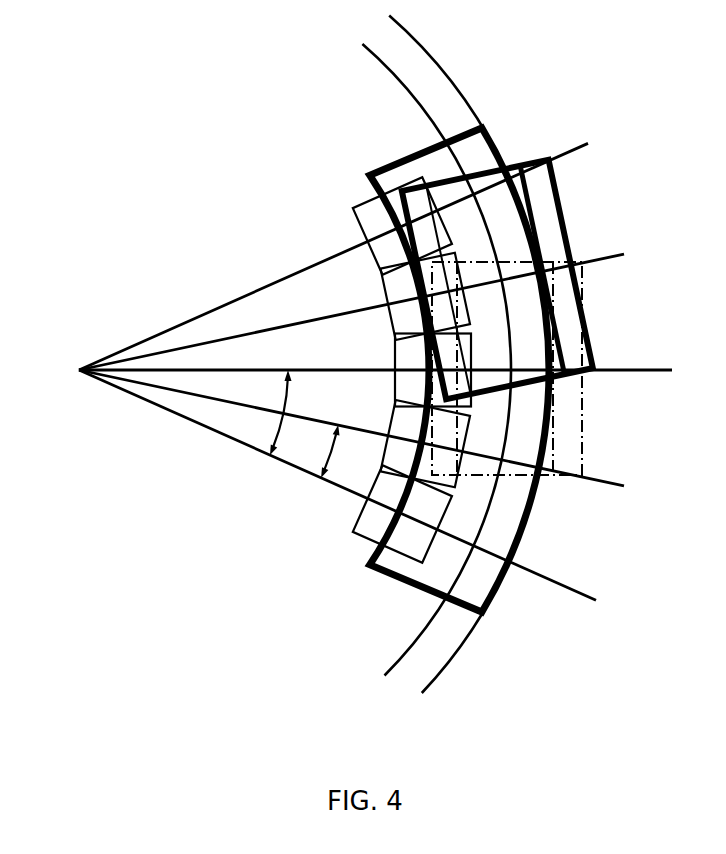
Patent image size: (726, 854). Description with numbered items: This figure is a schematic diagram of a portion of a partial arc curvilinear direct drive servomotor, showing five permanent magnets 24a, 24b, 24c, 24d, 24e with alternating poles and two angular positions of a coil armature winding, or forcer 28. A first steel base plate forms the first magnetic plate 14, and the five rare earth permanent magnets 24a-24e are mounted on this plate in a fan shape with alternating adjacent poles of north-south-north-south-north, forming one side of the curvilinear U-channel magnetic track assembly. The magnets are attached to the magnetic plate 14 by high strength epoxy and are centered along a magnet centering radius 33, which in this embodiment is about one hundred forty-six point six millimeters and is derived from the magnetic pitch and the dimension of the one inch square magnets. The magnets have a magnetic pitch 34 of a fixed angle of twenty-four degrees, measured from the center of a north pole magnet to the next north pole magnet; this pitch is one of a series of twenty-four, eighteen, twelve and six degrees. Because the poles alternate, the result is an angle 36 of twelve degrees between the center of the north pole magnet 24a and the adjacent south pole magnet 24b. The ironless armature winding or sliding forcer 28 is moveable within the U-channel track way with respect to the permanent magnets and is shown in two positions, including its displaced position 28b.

The first magnetic plate 14 is at (392, 168).
The permanent magnet 24a is at (490, 576).
The permanent magnet 24b is at (525, 488).
The permanent magnet 24c is at (538, 342).
The permanent magnet 24d is at (540, 247).
The permanent magnet 24e is at (488, 161).
The coil armature winding forcer 28 is at (583, 420).
The forcer position 28b is at (562, 198).
The magnet centering radius 33 is at (416, 641).
The magnetic pitch 34 is at (270, 425).
The angle 36 is at (327, 455).